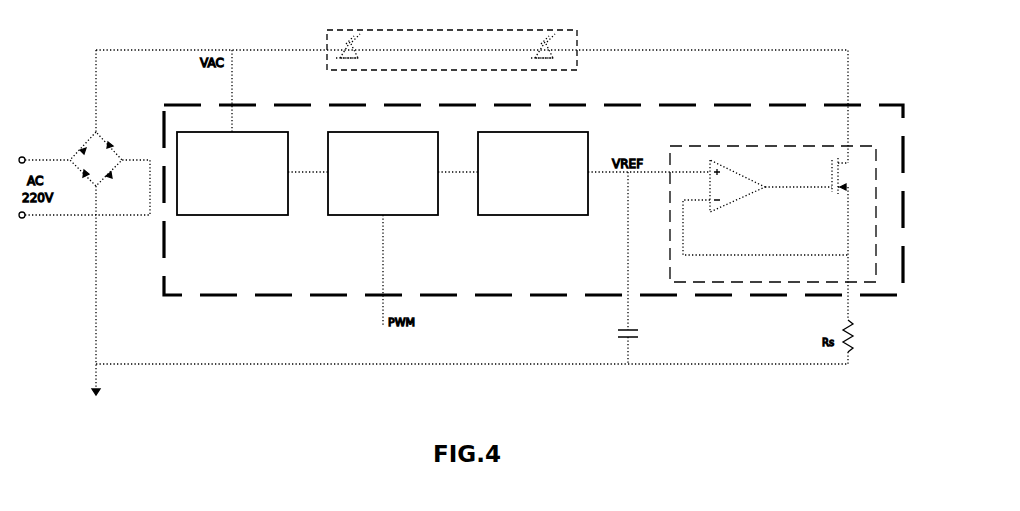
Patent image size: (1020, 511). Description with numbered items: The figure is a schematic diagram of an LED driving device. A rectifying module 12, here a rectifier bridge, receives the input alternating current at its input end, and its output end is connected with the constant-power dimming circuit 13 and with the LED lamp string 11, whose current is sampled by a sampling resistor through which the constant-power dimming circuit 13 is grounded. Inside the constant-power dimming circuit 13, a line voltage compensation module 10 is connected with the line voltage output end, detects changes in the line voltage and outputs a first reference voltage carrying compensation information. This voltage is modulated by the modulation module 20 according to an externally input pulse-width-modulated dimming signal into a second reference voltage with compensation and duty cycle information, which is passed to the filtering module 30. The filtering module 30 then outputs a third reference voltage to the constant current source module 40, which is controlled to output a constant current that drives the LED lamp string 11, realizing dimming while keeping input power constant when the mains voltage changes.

The line voltage compensation module 10 is at (233, 216).
The LED lamp string 11 is at (500, 30).
The rectifying module 12 is at (97, 132).
The constant-power dimming circuit 13 is at (645, 105).
The modulation module 20 is at (413, 216).
The filtering module 30 is at (515, 216).
The constant current source module 40 is at (771, 145).